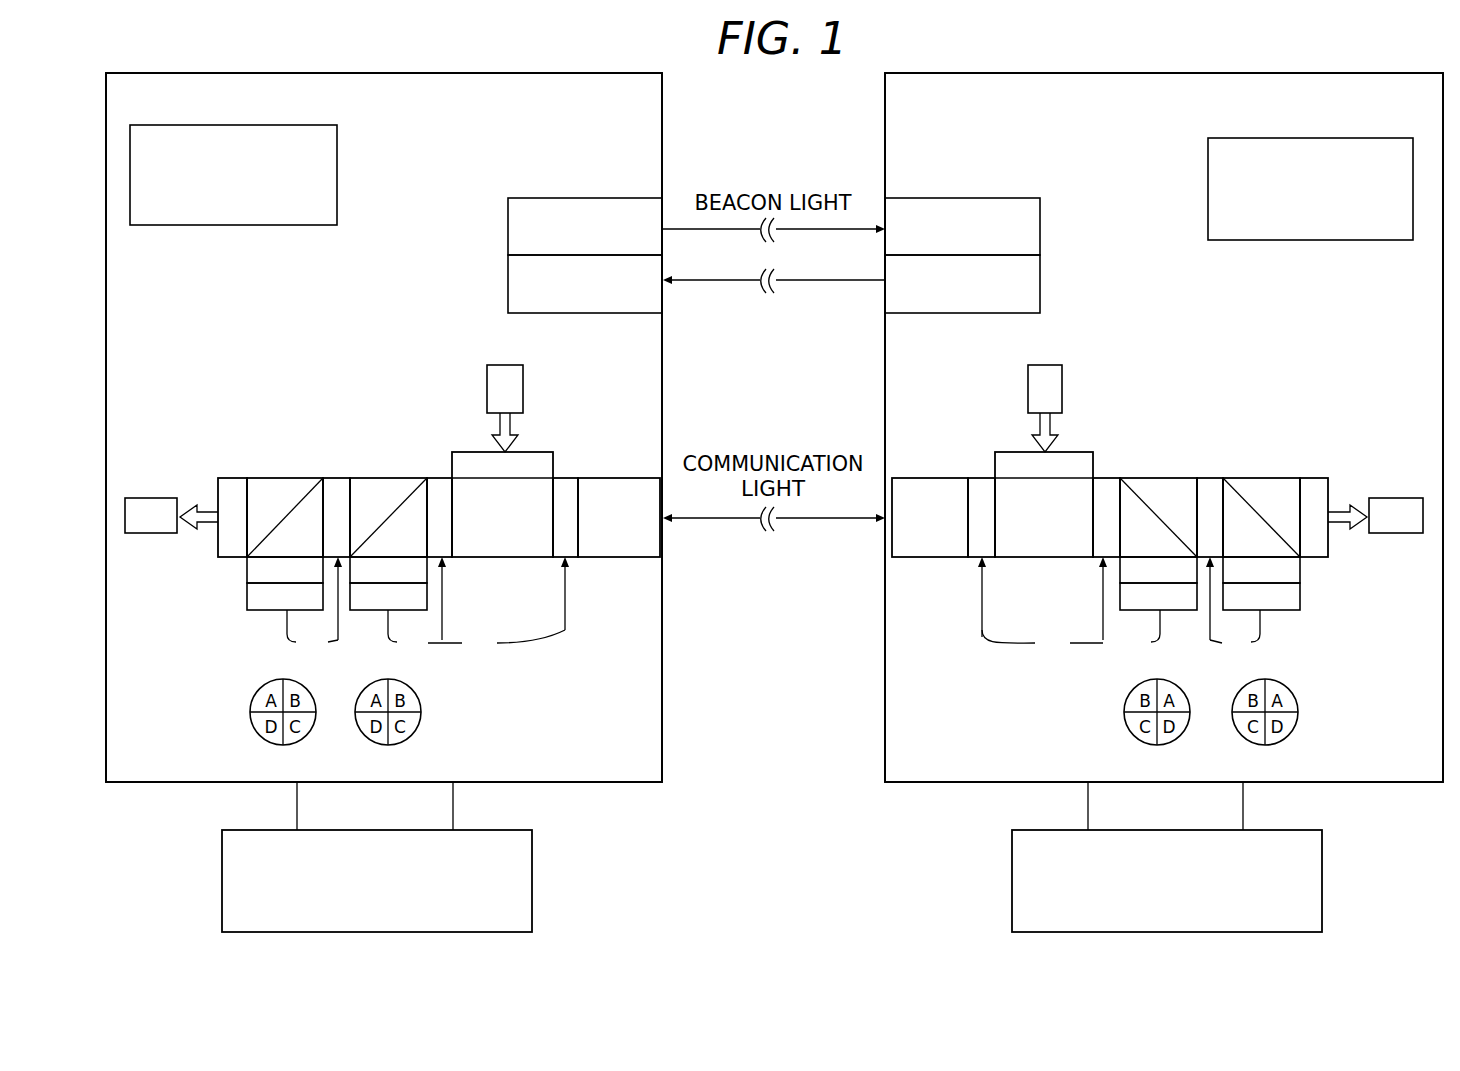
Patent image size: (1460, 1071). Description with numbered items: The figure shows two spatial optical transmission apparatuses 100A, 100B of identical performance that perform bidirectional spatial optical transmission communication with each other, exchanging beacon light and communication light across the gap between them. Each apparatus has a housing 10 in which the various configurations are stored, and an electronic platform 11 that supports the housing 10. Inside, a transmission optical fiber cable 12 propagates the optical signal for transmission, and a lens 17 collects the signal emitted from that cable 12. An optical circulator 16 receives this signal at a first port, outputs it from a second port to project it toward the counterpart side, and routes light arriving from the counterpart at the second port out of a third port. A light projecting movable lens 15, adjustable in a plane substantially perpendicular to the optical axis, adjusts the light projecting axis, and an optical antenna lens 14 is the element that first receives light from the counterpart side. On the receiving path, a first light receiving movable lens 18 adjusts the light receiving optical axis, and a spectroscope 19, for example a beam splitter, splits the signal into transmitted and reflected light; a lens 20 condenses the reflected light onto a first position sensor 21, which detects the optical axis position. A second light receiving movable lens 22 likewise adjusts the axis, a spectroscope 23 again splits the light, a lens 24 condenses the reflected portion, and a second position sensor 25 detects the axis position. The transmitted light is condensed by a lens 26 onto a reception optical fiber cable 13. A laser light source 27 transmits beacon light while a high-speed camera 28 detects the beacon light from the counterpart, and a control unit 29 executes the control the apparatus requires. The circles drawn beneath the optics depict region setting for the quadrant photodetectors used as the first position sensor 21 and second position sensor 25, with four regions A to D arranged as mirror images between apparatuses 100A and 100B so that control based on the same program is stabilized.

The spatial optical transmission apparatus 100A is at (384, 410).
The spatial optical transmission apparatus 100B is at (1164, 410).
The housing 10 is at (140, 782).
The electronic platform 11 is at (532, 866).
The transmission optical fiber cable 12 is at (505, 365).
The reception optical fiber cable 13 is at (138, 498).
The optical antenna lens 14 is at (616, 478).
The light projecting movable lens 15 is at (566, 478).
The optical circulator 16 is at (537, 557).
The lens 17 is at (535, 452).
The first light receiving movable lens 18 is at (438, 478).
The spectroscope 19 is at (375, 478).
The lens 20 is at (427, 565).
The first position sensor 21 is at (427, 595).
The second light receiving movable lens 22 is at (337, 478).
The spectroscope 23 is at (278, 478).
The lens 24 is at (247, 568).
The second position sensor 25 is at (247, 600).
The lens 26 is at (232, 478).
The laser light source 27 is at (508, 236).
The high-speed camera 28 is at (508, 290).
The control unit 29 is at (337, 172).